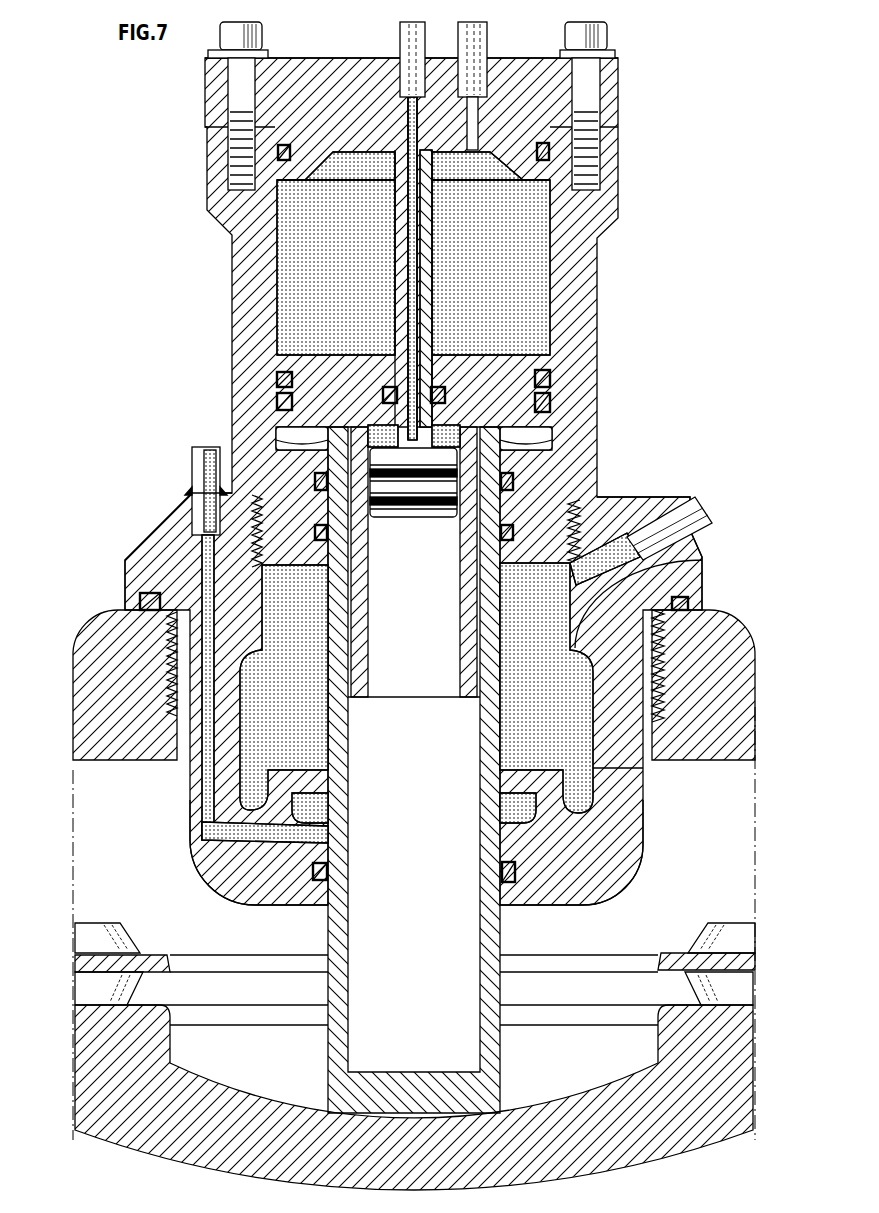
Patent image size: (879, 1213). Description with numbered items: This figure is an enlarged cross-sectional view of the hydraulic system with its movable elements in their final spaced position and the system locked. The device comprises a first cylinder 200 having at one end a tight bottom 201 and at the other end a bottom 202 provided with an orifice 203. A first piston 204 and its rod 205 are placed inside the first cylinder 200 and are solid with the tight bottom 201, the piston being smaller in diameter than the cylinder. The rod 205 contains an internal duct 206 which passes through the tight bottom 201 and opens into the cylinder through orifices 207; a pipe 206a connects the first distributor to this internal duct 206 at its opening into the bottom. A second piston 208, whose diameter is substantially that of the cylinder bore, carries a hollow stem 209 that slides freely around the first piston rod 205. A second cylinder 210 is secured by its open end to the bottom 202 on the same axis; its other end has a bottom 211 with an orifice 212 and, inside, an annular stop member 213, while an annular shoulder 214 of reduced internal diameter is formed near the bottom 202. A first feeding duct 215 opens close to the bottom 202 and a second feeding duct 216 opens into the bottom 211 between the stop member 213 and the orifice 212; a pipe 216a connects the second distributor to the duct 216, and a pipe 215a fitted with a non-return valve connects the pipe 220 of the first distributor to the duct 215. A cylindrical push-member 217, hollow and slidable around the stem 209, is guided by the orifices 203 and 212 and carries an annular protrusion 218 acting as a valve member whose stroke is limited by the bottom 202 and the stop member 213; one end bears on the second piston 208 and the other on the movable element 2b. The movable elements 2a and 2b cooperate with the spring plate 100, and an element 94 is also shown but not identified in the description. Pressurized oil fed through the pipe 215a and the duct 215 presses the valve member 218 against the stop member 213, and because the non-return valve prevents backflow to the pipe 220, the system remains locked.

The first cylinder 200 is at (588, 258).
The tight bottom 201 is at (205, 78).
The bottom 202 is at (538, 478).
The orifice 203 is at (552, 440).
The first piston 204 is at (412, 507).
The rod 205 is at (407, 250).
The internal duct 206 is at (417, 272).
The pipe 206a is at (400, 38).
The orifices 207 is at (350, 437).
The second piston 208 is at (533, 365).
The hollow stem 209 is at (356, 605).
The second cylinder 210 is at (140, 558).
The bottom 211 is at (607, 867).
The orifice 212 is at (542, 818).
The annular stop member 213 is at (207, 815).
The annular shoulder 214 is at (688, 590).
The first feeding duct 215 is at (602, 557).
The pipe 215a is at (697, 497).
The second feeding duct 216 is at (203, 835).
The pipe 216a is at (198, 482).
The push-member 217 is at (488, 432).
The annular protrusion 218 is at (542, 775).
The pipe 220 is at (490, 35).
The movable element 2a is at (90, 712).
The movable element 2b is at (83, 1058).
The bonnet flange 94 is at (97, 932).
The spring plate 100 is at (75, 966).